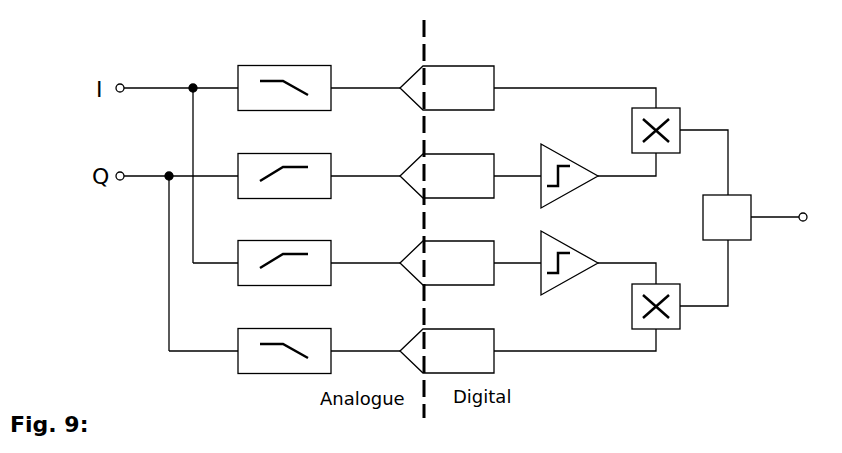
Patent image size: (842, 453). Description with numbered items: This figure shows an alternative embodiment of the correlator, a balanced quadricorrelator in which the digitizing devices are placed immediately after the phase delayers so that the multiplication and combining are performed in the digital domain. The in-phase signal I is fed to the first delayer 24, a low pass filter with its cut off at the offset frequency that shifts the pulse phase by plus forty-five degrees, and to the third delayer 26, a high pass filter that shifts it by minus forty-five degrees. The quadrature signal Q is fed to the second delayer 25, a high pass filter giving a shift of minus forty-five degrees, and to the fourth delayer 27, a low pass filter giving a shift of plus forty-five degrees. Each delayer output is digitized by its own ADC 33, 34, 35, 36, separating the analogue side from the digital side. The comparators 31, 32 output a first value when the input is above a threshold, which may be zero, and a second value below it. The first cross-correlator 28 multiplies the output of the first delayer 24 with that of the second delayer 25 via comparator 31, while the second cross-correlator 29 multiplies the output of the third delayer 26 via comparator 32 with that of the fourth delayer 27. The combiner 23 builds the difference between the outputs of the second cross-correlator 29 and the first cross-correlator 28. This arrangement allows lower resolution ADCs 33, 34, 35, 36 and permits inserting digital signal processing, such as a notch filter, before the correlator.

The combiner 23 is at (753, 188).
The first delayer 24 is at (338, 70).
The second delayer 25 is at (338, 167).
The third delayer 26 is at (338, 248).
The fourth delayer 27 is at (338, 340).
The first cross-correlator 28 is at (682, 110).
The second cross-correlator 29 is at (687, 322).
The comparator 31 is at (568, 150).
The comparator 32 is at (587, 252).
The digitizing device (ADC) 33 is at (482, 68).
The digitizing device (ADC) 34 is at (490, 153).
The digitizing device (ADC) 35 is at (470, 245).
The digitizing device (ADC) 36 is at (470, 338).